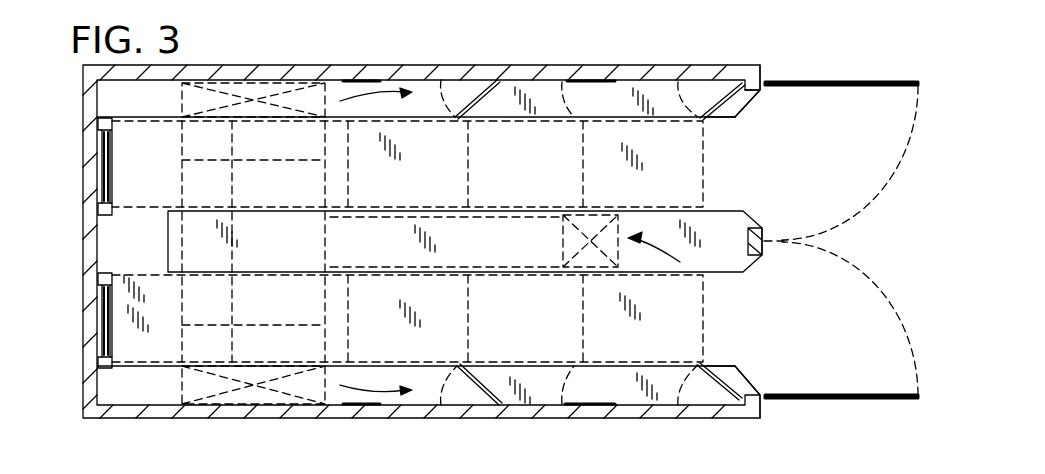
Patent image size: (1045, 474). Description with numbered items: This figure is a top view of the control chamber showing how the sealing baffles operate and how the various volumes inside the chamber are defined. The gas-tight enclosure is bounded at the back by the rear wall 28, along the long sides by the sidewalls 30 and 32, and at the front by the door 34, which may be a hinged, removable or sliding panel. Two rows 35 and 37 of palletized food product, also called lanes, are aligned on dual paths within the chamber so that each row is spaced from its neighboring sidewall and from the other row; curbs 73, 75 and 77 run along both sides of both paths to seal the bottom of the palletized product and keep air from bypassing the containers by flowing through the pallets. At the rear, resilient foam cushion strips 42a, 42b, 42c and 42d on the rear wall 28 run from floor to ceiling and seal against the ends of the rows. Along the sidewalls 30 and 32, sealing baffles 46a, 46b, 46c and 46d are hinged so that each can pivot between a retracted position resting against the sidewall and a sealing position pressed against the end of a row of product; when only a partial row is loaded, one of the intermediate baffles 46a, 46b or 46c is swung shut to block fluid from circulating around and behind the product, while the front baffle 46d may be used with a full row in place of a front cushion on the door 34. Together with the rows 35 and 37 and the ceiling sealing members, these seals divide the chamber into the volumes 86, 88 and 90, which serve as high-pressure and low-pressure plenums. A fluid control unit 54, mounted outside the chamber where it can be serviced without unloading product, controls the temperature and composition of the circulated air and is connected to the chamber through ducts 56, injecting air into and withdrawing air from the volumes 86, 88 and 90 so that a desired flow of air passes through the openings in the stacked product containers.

The rear wall 28 is at (83, 177).
The sidewall 30 is at (263, 417).
The sidewall 32 is at (533, 67).
The door 34 is at (823, 80).
The row of palletized product 35 is at (707, 315).
The row of palletized product 37 is at (705, 155).
The foam cushion strip 42a is at (98, 359).
The foam cushion strip 42b is at (98, 277).
The foam cushion strip 42c is at (98, 205).
The foam cushion strip 42d is at (98, 120).
The sealing baffle 46a is at (343, 77).
The sealing baffle 46b is at (468, 100).
The sealing baffle 46c is at (600, 67).
The sealing baffle 46d is at (703, 103).
The fluid control unit 54 is at (180, 188).
The duct 56 is at (240, 67).
The curb 73 is at (743, 380).
The curb 75 is at (748, 215).
The curb 77 is at (743, 103).
The volume 86 is at (152, 396).
The volume 88 is at (152, 254).
The volume 90 is at (150, 108).